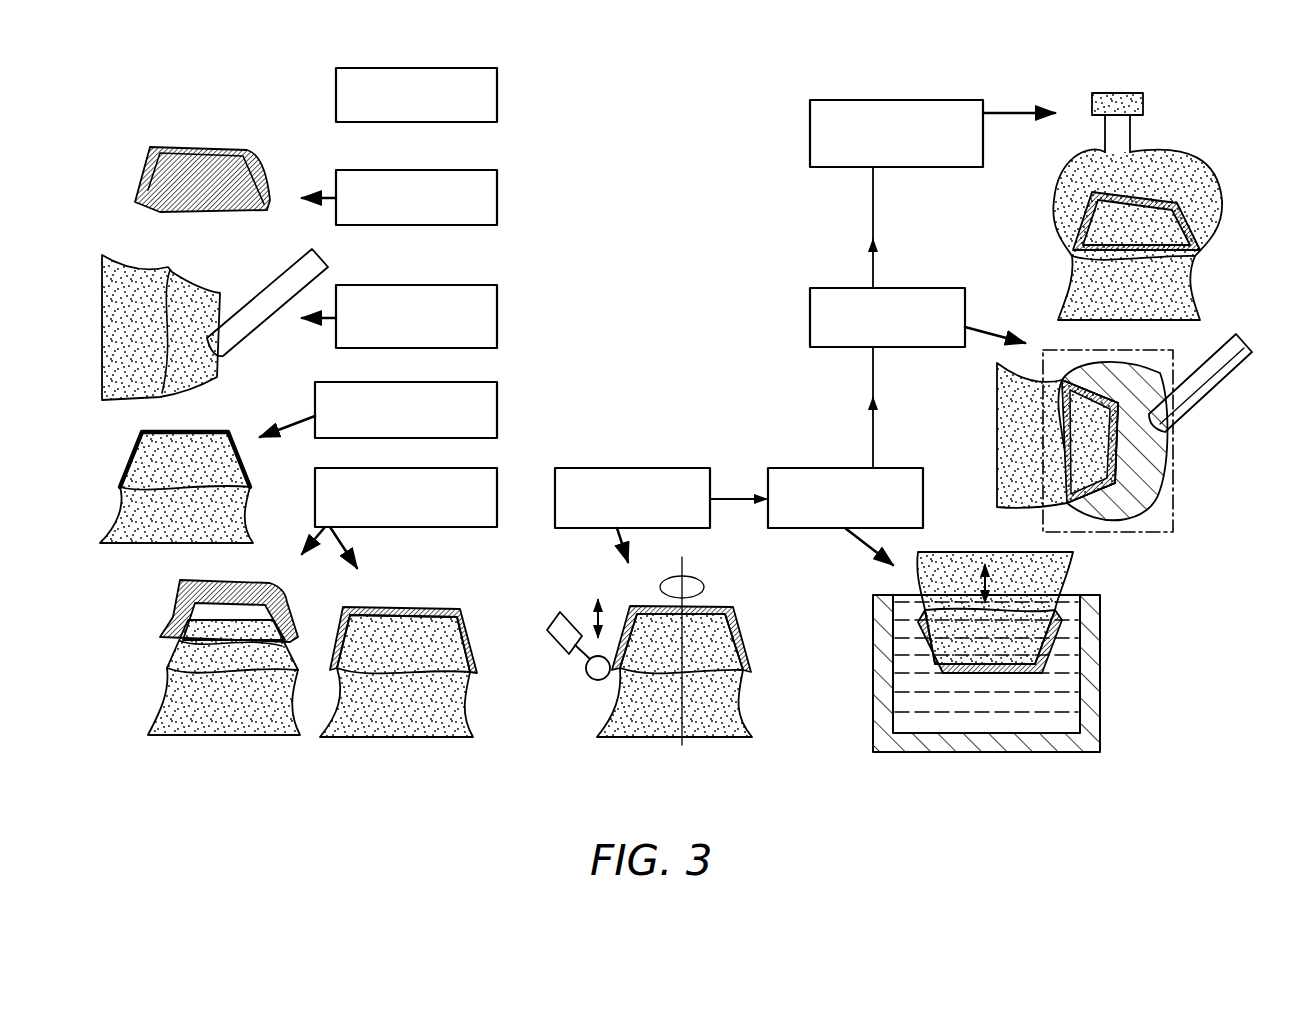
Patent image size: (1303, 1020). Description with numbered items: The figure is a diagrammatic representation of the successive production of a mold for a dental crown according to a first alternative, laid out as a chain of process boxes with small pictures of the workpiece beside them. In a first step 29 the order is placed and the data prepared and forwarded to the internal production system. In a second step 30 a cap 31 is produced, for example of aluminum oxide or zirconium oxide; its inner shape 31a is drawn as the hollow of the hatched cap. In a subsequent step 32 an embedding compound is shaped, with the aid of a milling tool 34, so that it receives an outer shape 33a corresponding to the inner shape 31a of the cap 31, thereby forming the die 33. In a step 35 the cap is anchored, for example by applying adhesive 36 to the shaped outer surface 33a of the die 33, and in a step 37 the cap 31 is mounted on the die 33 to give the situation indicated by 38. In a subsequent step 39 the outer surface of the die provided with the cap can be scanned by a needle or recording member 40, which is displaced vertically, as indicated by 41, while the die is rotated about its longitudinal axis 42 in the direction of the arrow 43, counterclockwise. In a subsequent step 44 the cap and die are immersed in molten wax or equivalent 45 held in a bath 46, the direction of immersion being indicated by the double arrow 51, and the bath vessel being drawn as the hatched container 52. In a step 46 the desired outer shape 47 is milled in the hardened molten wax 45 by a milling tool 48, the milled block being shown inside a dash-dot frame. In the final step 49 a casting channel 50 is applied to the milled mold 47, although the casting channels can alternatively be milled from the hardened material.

The first step 29 is at (497, 110).
The second step 30 is at (497, 197).
The cap 31 is at (266, 158).
The inner shape of the cap 31a is at (150, 180).
The subsequent step 32 is at (497, 318).
The die 33 is at (142, 280).
The outer shape of the embedding compound 33a is at (207, 290).
The milling tool 34 is at (257, 327).
The step 35 is at (497, 402).
The adhesive 36 is at (193, 436).
The step 37 is at (483, 477).
The situation with cap mounted on die 38 is at (393, 602).
The subsequent step 39 is at (675, 470).
The needle or recording member 40 is at (570, 620).
The vertical movement 41 is at (610, 618).
The longitudinal axis 42 is at (690, 572).
The arrow 43 is at (668, 582).
The subsequent step 44 is at (900, 482).
The molten wax or equivalent 45 is at (1158, 513).
The bath 46 is at (950, 300).
The desired outer shape 47 is at (1200, 150).
The milling tool 48 is at (1210, 396).
The final step 49 is at (955, 160).
The casting channel 50 is at (1130, 128).
The dipping tooth model 51 is at (983, 583).
The container 52 is at (1085, 645).